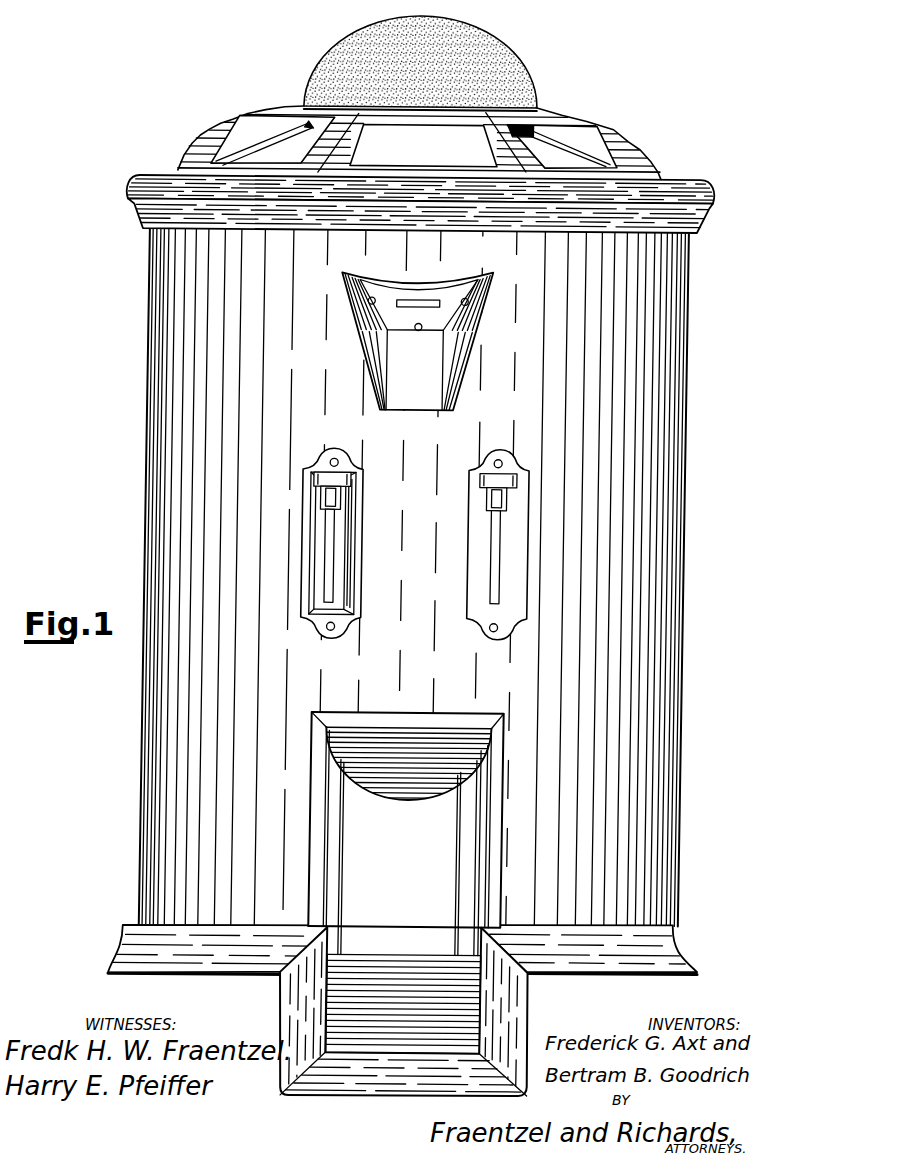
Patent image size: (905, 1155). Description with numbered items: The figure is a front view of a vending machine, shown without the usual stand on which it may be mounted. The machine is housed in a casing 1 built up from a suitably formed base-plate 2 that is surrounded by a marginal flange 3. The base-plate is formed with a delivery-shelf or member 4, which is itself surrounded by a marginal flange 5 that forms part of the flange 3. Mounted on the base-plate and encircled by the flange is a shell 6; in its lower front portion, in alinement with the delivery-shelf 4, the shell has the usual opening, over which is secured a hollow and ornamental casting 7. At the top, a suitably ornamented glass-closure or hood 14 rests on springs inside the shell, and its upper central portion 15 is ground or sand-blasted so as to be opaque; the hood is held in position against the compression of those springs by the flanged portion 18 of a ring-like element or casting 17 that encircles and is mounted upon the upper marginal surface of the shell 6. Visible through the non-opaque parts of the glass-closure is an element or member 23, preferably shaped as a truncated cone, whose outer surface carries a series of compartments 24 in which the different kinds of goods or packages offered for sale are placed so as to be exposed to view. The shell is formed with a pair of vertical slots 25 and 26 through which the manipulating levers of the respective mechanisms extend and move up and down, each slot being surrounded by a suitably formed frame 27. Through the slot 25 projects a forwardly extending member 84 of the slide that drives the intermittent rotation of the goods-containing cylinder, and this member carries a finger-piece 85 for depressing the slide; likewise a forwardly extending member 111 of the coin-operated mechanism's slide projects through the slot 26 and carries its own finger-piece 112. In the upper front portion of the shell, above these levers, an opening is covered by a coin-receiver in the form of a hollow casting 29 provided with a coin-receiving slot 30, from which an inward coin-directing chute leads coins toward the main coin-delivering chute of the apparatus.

The casing 1 is at (437, 578).
The base-plate 2 is at (592, 972).
The marginal flange 3 is at (138, 936).
The delivery-shelf 4 is at (377, 1035).
The marginal flange 5 is at (298, 1006).
The shell 6 is at (636, 537).
The hollow ornamental casting 7 is at (406, 834).
The glass-closure 14 is at (575, 120).
The upper central portion 15 is at (469, 56).
The ring-like element 17 is at (692, 222).
The flanged portion 18 is at (671, 184).
The element or member 23 is at (346, 152).
The compartments 24 is at (278, 159).
The vertical slot 25 is at (331, 548).
The vertical slot 26 is at (495, 556).
The frames 27 is at (356, 517).
The coin-receiver 29 is at (421, 399).
The coin-receiving slot 30 is at (413, 299).
The forwardly extending member 84 is at (329, 513).
The finger-piece 85 is at (337, 474).
The forwardly extending member 111 is at (486, 508).
The finger-piece 112 is at (500, 473).